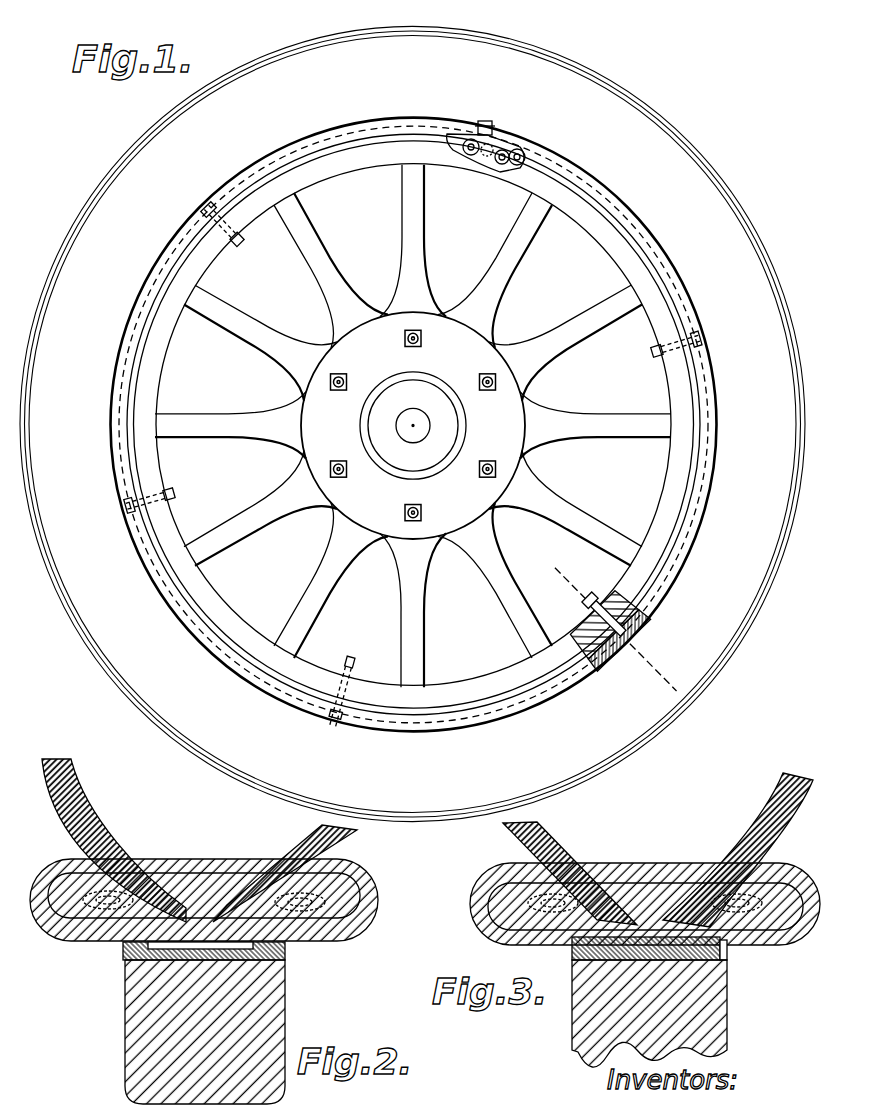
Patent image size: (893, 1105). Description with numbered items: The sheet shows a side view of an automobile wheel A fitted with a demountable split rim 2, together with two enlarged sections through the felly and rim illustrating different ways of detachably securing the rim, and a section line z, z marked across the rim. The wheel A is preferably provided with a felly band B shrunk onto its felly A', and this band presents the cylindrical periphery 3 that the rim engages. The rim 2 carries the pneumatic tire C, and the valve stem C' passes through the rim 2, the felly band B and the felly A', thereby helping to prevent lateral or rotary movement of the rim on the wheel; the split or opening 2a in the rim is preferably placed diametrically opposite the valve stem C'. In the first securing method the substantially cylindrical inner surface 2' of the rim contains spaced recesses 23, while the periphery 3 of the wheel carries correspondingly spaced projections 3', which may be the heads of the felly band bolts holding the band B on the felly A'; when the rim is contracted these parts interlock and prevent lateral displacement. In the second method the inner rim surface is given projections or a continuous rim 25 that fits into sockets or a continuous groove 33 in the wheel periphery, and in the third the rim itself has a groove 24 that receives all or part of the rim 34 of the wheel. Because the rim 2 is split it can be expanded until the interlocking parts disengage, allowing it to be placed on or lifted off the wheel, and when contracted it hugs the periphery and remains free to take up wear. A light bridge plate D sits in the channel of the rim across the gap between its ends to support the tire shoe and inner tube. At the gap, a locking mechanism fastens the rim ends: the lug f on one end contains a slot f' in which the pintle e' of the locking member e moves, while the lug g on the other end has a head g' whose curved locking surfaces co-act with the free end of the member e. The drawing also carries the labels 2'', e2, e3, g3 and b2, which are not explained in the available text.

In FIG. 1, the wheel A is at (426, 410).
In FIG. 1, the felly A' is at (414, 424).
In FIG. 2, the felly A' is at (178, 1032).
In FIG. 3, the felly A' is at (623, 1013).
In FIG. 1, the felly band B is at (700, 388).
In FIG. 1, the pneumatic tire C is at (412, 423).
In FIG. 1, the valve stem C' is at (341, 671).
In FIG. 1, the rim 2 is at (433, 425).
In FIG. 2, the rim 2 is at (220, 900).
In FIG. 3, the rim 2 is at (630, 902).
In FIG. 1, the inner cylindrical surface 2' is at (599, 698).
In FIG. 2, the inner cylindrical surface 2' is at (324, 963).
In FIG. 3, the inner cylindrical surface 2' is at (550, 994).
In FIG. 1, the rim section 2'' is at (639, 639).
In FIG. 1, the recesses 23 is at (615, 647).
In FIG. 1, the split or opening 2a is at (486, 128).
In FIG. 3, the groove 24 is at (601, 930).
In FIG. 2, the continuous rim 25 is at (190, 942).
In FIG. 1, the cylindrical periphery 3 is at (610, 572).
In FIG. 1, the projections 3' is at (593, 623).
In FIG. 2, the continuous groove 33 is at (124, 961).
In FIG. 3, the rim of the wheel 34 is at (724, 972).
In FIG. 1, the bridge plate D is at (486, 120).
In FIG. 1, the locking member e is at (485, 176).
In FIG. 1, the pintle e' is at (466, 191).
In FIG. 1, the clamp arm e2 is at (495, 163).
In FIG. 1, the clamp roller e3 is at (524, 156).
In FIG. 1, the lug f is at (457, 176).
In FIG. 1, the slot f' is at (441, 117).
In FIG. 1, the lug g is at (533, 128).
In FIG. 1, the head g' is at (506, 181).
In FIG. 1, the clamp lever end g3 is at (507, 147).
In FIG. 1, the spoke b2 is at (425, 170).
In FIG. 1, the section line z is at (610, 629).